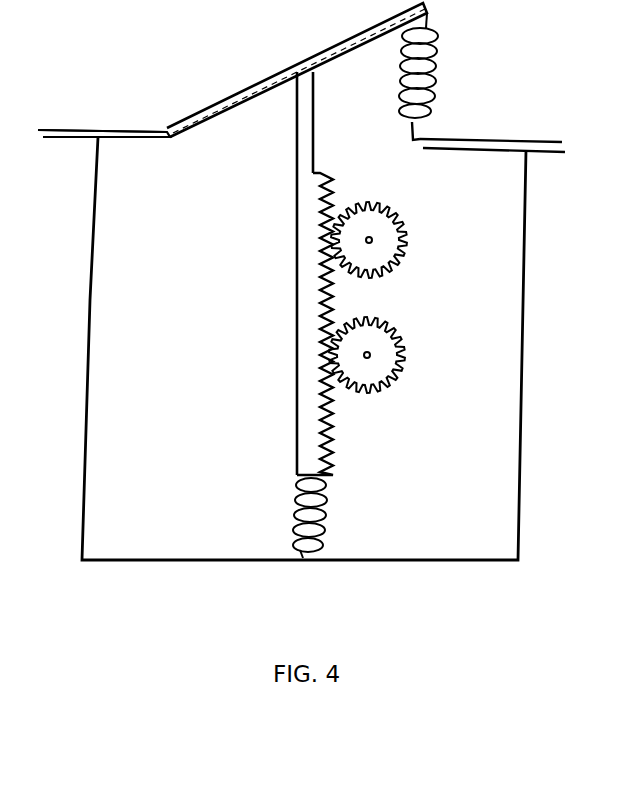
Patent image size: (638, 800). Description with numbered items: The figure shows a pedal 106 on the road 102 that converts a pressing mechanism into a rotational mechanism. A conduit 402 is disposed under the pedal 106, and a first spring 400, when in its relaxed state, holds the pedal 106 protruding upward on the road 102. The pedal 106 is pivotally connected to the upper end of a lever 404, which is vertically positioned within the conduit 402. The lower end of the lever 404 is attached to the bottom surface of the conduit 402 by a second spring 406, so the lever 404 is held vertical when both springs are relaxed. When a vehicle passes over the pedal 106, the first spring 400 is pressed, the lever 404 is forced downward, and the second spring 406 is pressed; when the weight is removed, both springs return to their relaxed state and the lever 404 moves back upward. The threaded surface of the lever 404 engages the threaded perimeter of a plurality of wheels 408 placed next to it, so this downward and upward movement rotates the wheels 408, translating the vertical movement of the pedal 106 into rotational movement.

The road 102 is at (85, 125).
The pedal 106 is at (268, 77).
The first spring 400 is at (440, 97).
The conduit 402 is at (90, 306).
The lever 404 is at (297, 207).
The second spring 406 is at (288, 511).
The wheels 408 is at (407, 275).